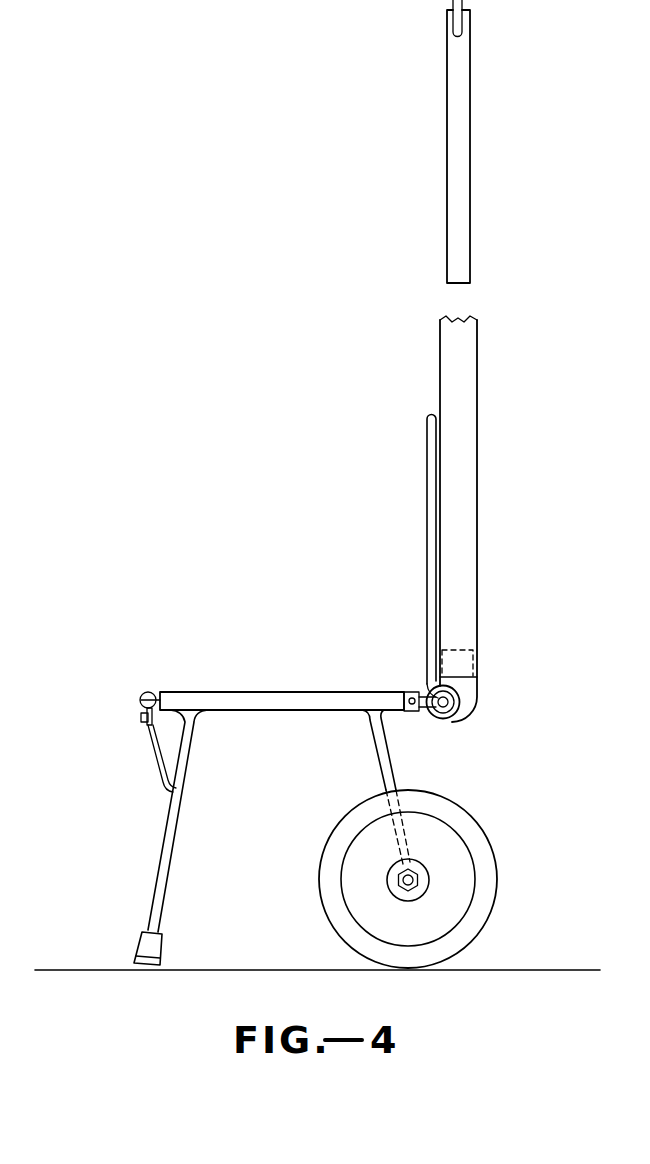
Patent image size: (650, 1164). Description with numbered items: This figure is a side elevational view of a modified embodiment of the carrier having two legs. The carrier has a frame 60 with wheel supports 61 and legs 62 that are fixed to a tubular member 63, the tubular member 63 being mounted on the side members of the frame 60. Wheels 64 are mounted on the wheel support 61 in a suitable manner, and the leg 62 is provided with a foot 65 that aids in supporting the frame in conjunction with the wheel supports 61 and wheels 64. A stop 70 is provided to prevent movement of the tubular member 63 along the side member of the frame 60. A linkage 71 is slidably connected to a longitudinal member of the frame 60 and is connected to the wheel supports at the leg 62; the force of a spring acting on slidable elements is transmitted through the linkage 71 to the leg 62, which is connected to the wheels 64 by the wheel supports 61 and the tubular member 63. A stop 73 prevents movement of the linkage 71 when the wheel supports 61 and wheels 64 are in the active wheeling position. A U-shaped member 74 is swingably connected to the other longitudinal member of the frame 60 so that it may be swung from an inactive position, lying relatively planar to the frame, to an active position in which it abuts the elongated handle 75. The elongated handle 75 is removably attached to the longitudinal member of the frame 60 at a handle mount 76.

The frame 60 is at (457, 712).
The wheel support 61 is at (388, 762).
The leg 62 is at (188, 747).
The tubular member 63 is at (297, 690).
The wheel 64 is at (483, 856).
The foot 65 is at (152, 942).
The stop 70 is at (411, 712).
The linkage 71 is at (155, 751).
The stop 73 is at (141, 700).
The U-shaped member 74 is at (430, 493).
The elongated handle 75 is at (463, 130).
The handle mount 76 is at (470, 663).